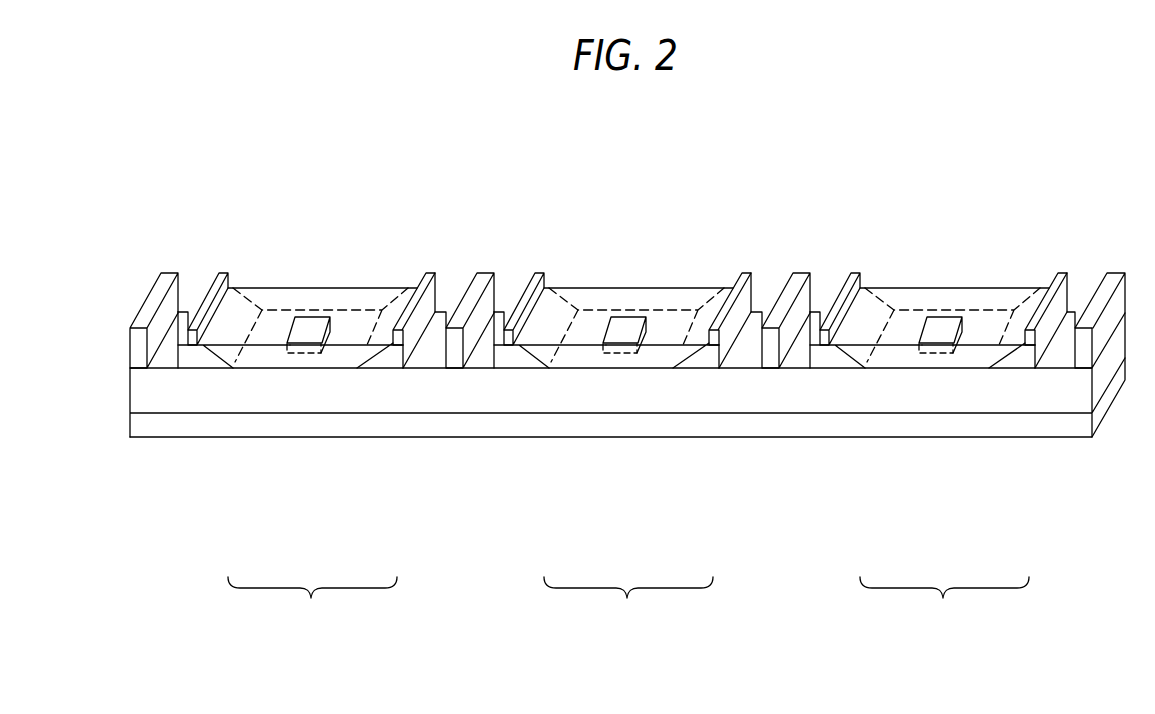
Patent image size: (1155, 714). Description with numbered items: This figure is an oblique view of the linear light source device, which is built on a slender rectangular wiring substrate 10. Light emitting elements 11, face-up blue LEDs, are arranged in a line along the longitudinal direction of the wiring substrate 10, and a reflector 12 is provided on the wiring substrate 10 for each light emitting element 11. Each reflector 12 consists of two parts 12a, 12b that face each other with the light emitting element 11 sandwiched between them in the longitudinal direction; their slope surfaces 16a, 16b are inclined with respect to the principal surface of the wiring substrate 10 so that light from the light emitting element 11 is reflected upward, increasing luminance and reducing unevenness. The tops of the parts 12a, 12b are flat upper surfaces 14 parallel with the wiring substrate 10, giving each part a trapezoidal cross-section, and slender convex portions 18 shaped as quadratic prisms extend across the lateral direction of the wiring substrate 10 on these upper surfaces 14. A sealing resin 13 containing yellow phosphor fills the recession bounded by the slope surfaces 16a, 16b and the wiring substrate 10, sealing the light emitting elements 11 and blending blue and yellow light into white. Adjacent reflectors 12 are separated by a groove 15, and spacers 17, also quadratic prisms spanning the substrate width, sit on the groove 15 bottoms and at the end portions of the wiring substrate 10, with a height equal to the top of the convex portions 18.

The wiring substrate 10 is at (767, 402).
The light emitting element 11 is at (318, 317).
The reflector 12 is at (628, 604).
The reflector part 12a is at (391, 362).
The reflector part 12b is at (200, 362).
The sealing resin 13 is at (343, 287).
The upper surface 14 is at (1070, 428).
The groove 15 is at (190, 304).
The slope surface 16a is at (366, 348).
The slope surface 16b is at (232, 355).
The spacer 17 is at (168, 272).
The convex portion 18 is at (224, 272).